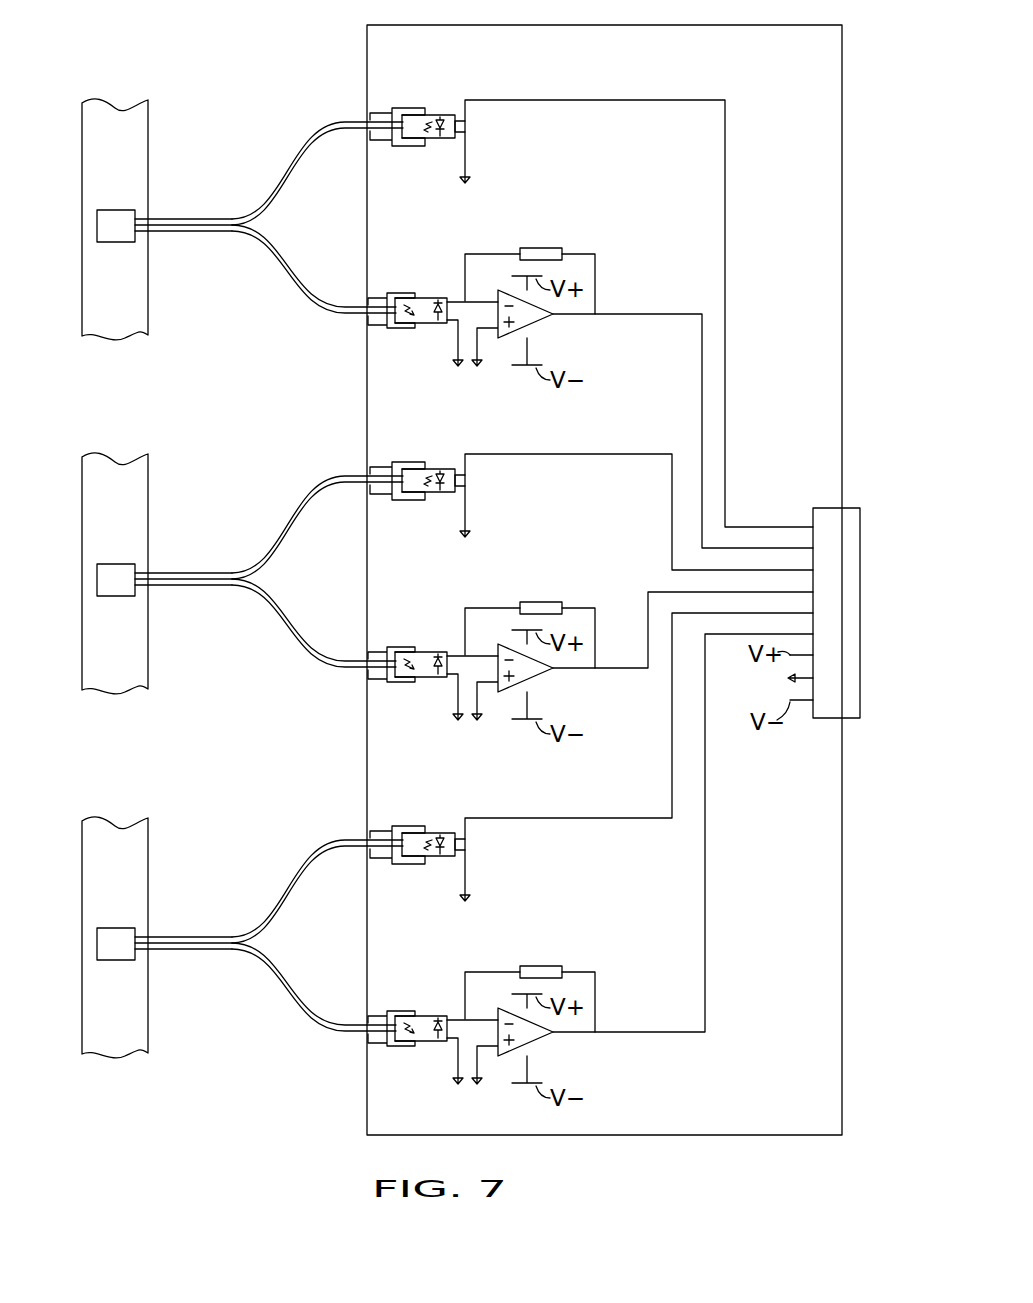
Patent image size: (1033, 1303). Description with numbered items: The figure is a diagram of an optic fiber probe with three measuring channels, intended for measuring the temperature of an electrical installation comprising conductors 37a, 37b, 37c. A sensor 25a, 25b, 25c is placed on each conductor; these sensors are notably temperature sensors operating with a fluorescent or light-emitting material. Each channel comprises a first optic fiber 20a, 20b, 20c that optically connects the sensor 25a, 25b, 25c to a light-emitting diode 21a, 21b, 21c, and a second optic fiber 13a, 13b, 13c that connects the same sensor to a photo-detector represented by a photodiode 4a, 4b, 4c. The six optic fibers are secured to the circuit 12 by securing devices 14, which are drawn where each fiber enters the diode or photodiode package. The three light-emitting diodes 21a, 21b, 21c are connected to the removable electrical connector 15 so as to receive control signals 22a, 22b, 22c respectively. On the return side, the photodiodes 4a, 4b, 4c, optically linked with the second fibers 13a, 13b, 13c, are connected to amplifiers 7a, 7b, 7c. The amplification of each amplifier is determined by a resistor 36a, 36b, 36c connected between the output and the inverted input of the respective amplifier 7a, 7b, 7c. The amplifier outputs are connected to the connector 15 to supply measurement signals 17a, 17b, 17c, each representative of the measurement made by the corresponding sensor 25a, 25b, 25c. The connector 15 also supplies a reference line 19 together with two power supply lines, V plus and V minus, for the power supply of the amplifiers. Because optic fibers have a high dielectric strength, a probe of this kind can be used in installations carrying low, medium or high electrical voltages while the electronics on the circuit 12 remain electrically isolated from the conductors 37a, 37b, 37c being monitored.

The photodiode 4a is at (420, 328).
The photodiode 4b is at (420, 682).
The photodiode 4c is at (420, 1046).
The amplifier 7a is at (533, 322).
The amplifier 7b is at (533, 676).
The amplifier 7c is at (533, 1040).
The circuit 12 is at (722, 1134).
The second optic fiber 13a is at (248, 234).
The second optic fiber 13b is at (248, 588).
The second optic fiber 13c is at (248, 952).
The securing device 14 is at (400, 147).
The removable electrical connector 15 is at (853, 518).
The measurement signal 17a is at (650, 312).
The measurement signal 17b is at (646, 598).
The measurement signal 17c is at (652, 1030).
The reference line 19 is at (786, 677).
The first optic fiber 20a is at (245, 215).
The first optic fiber 20b is at (245, 569).
The first optic fiber 20c is at (245, 933).
The light-emitting diode 21a is at (436, 108).
The light-emitting diode 21b is at (436, 462).
The light-emitting diode 21c is at (436, 826).
The control signal 22a is at (645, 103).
The control signal 22b is at (645, 457).
The control signal 22c is at (645, 821).
The sensor 25a is at (100, 220).
The sensor 25b is at (100, 574).
The sensor 25c is at (100, 938).
The resistor 36a is at (542, 247).
The resistor 36b is at (542, 601).
The resistor 36c is at (542, 965).
The conductor 37a is at (130, 311).
The conductor 37b is at (130, 665).
The conductor 37c is at (130, 1029).